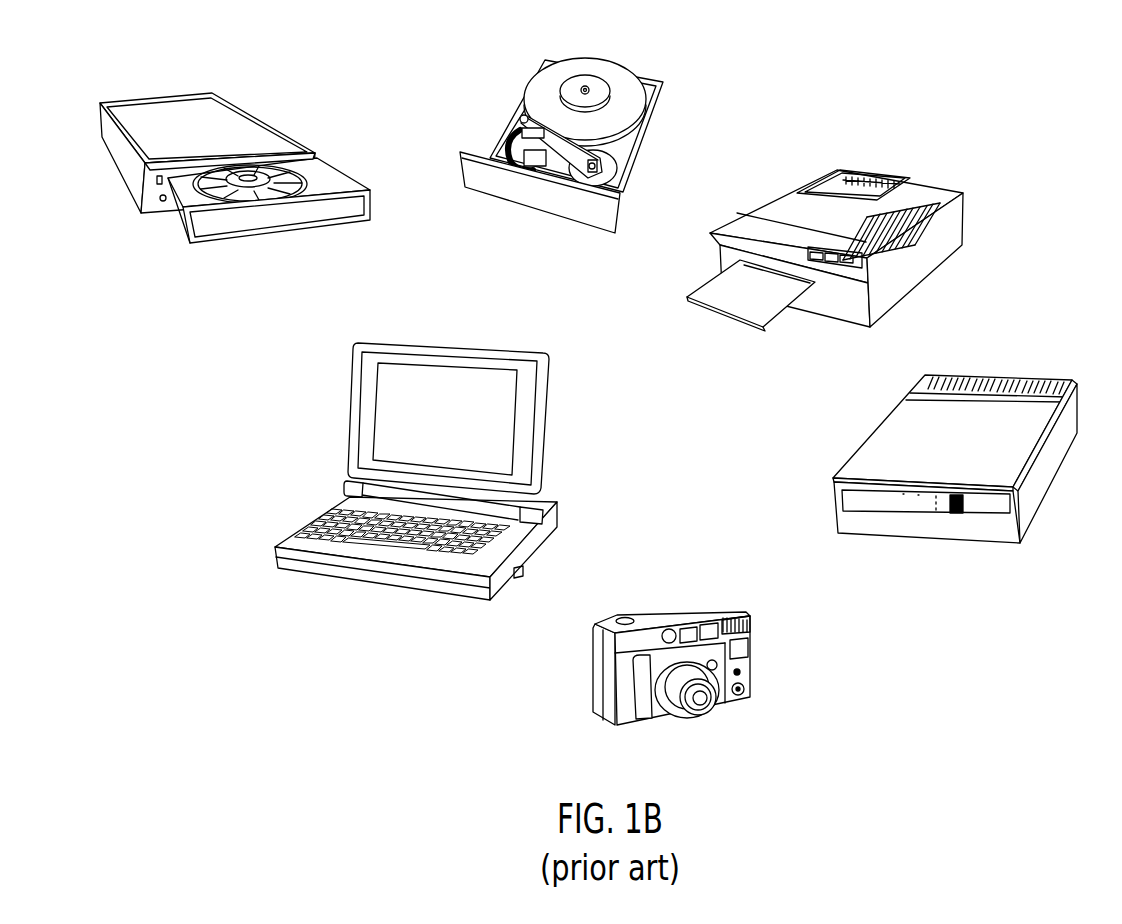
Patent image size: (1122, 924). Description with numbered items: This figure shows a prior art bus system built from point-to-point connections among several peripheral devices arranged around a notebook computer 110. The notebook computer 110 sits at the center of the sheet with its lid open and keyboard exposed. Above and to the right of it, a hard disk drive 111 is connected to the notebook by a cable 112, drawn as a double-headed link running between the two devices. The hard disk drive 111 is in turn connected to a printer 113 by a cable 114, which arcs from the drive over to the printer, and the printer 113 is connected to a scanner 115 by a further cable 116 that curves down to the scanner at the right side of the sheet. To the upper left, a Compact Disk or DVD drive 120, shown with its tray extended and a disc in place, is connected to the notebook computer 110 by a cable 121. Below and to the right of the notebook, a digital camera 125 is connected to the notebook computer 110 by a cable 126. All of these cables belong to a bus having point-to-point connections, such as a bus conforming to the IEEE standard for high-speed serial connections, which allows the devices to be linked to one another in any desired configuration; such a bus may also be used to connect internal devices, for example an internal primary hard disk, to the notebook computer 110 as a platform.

The notebook computer 110 is at (290, 532).
The hard disk drive 111 is at (573, 63).
The cable 112 is at (448, 338).
The printer 113 is at (807, 187).
The cable 114 is at (670, 83).
The scanner 115 is at (1058, 381).
The cable 116 is at (972, 222).
The Compact Disk or DVD drive 120 is at (132, 102).
The cable 121 is at (290, 237).
The digital camera 125 is at (598, 670).
The cable 126 is at (537, 563).